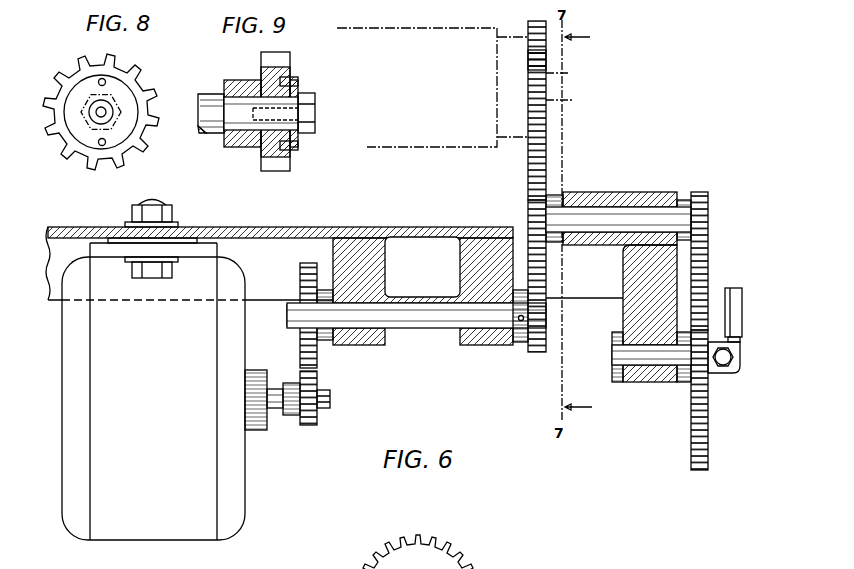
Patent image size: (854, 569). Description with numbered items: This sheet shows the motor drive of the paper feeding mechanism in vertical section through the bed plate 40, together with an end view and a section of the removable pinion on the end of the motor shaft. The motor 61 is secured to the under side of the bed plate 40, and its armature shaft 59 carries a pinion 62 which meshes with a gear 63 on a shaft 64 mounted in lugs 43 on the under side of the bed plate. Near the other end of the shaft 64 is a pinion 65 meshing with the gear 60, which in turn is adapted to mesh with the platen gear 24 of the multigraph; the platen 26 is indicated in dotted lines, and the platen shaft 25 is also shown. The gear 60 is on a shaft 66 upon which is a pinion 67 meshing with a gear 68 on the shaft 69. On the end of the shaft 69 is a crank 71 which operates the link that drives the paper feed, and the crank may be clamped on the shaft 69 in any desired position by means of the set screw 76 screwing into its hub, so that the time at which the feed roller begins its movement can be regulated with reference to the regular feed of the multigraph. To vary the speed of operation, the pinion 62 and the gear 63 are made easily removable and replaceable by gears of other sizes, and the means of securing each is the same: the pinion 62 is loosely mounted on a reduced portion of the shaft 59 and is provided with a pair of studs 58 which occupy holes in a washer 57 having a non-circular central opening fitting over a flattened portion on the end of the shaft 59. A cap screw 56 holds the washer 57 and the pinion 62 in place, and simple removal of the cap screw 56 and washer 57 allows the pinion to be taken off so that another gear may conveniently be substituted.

In FIG. 6, the platen gear 24 is at (528, 60).
In FIG. 6, the platen shaft 25 is at (566, 75).
In FIG. 6, the platen 26 is at (475, 30).
In FIG. 6, the bed plate 40 is at (361, 268).
In FIG. 6, the lugs 43 is at (460, 259).
In FIG. 9, the cap screw 56 is at (318, 118).
In FIG. 6, the cap screw 56 is at (332, 396).
In FIG. 8, the washer 57 is at (128, 118).
In FIG. 9, the washer 57 is at (300, 90).
In FIG. 6, the washer 57 is at (320, 416).
In FIG. 8, the studs 58 is at (98, 80).
In FIG. 9, the studs 58 is at (300, 80).
In FIG. 9, the armature shaft 59 is at (207, 122).
In FIG. 6, the armature shaft 59 is at (276, 388).
In FIG. 6, the gear 60 is at (548, 173).
In FIG. 6, the motor 61 is at (153, 370).
In FIG. 8, the pinion 62 is at (139, 79).
In FIG. 9, the pinion 62 is at (280, 163).
In FIG. 6, the pinion 62 is at (311, 426).
In FIG. 6, the gear 63 is at (300, 271).
In FIG. 6, the shaft 64 is at (421, 322).
In FIG. 6, the pinion 65 is at (538, 353).
In FIG. 6, the shaft 66 is at (652, 206).
In FIG. 6, the pinion 67 is at (716, 234).
In FIG. 6, the gear 68 is at (708, 434).
In FIG. 6, the shaft 69 is at (637, 383).
In FIG. 6, the crank 71 is at (742, 318).
In FIG. 6, the set screw 76 is at (740, 362).